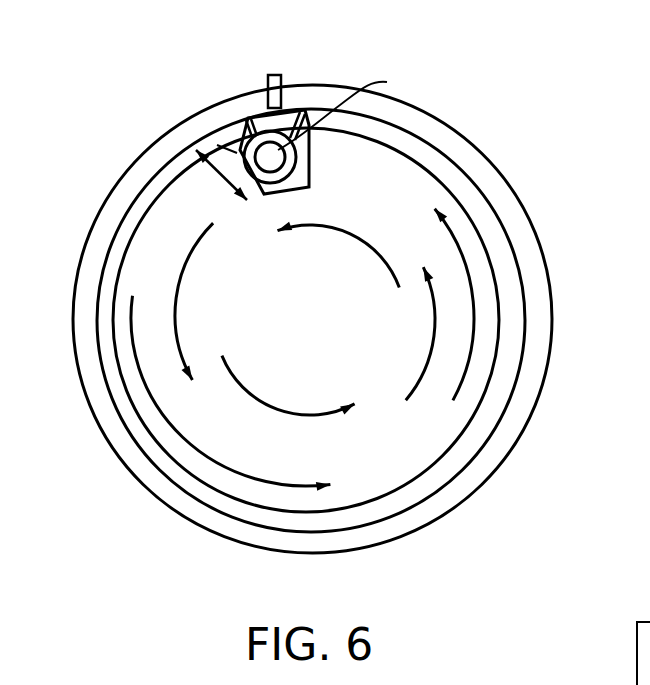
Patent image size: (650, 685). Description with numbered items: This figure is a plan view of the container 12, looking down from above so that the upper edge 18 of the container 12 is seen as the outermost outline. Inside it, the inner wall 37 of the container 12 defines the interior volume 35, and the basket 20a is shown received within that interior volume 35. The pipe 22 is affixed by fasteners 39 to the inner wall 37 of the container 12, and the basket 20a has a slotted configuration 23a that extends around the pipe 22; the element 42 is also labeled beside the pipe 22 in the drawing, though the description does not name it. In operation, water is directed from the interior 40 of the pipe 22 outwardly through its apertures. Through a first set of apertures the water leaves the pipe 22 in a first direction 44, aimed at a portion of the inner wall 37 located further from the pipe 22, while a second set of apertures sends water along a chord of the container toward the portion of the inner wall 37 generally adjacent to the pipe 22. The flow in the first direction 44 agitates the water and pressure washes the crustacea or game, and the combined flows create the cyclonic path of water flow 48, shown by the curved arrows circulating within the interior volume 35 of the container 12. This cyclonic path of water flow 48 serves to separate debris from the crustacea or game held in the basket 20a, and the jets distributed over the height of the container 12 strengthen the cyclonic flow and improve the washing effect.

The container 12 is at (477, 160).
The upper edge 18 is at (538, 270).
The basket 20a is at (413, 162).
The pipe 22 is at (298, 147).
The slotted configuration 23a is at (311, 170).
The interior volume 35 is at (483, 398).
The inner wall 37 is at (443, 483).
The fasteners 39 is at (275, 73).
The interior of the pipe 40 is at (208, 182).
The nozzle housing 42 is at (270, 192).
The first direction 44 is at (237, 200).
The cyclonic path of water flow 48 is at (178, 308).